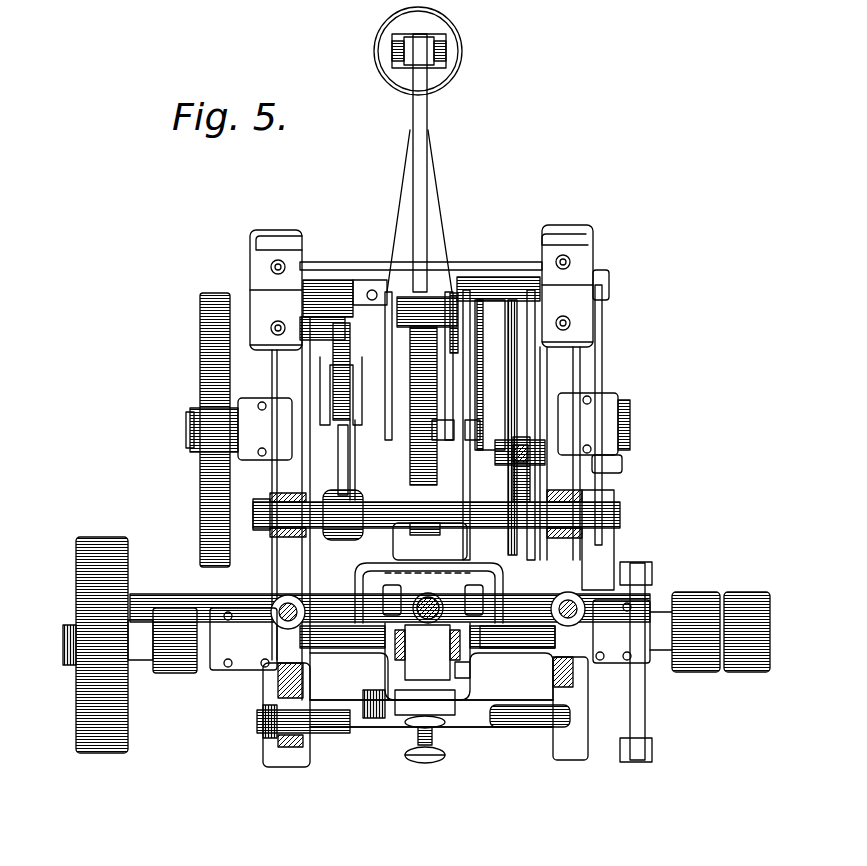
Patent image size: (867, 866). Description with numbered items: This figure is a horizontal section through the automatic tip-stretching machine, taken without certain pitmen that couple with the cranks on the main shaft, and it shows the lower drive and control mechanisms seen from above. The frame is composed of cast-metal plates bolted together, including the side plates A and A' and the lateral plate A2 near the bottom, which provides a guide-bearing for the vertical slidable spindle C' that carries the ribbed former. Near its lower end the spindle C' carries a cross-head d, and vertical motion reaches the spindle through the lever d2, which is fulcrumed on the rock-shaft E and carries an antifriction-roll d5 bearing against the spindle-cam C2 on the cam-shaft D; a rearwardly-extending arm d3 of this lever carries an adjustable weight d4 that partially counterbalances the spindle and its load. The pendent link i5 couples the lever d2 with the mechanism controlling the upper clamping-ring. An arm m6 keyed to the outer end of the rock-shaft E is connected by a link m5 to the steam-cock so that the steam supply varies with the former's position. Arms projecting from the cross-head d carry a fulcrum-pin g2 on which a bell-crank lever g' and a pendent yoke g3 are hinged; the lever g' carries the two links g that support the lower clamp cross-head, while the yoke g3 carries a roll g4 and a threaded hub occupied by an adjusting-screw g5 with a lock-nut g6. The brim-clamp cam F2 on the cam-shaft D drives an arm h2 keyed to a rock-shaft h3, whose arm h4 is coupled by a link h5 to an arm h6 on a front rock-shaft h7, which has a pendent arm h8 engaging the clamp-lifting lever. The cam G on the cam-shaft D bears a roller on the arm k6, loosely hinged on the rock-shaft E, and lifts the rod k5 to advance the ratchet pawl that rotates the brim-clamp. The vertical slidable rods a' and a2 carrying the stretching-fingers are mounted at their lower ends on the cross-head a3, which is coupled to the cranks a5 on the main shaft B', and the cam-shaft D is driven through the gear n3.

The weight d4 is at (429, 51).
The rearwardly-extending arm d3 is at (422, 237).
The cam C2 is at (432, 340).
The lateral plate A2 is at (488, 265).
The rock-shaft E is at (318, 292).
The brim-clamp cam F2 is at (341, 327).
The arm k6 is at (440, 432).
The pendent link i5 is at (470, 428).
The arm m6 is at (623, 415).
The gear n3 is at (203, 360).
The arm h2 is at (325, 392).
The lever d2 is at (467, 375).
The antifriction-roll d5 is at (432, 435).
The cam-shaft D is at (190, 428).
The link m5 is at (622, 466).
The cam G is at (530, 482).
The rock-shaft h3 is at (290, 513).
The rod k5 is at (507, 470).
The cross-head d is at (440, 592).
The arm h4 is at (620, 540).
The vertical slidable rod a' is at (390, 599).
The cross-head a3 is at (363, 592).
The spindle C' is at (444, 593).
The link g is at (424, 602).
The crank a5 is at (275, 670).
The vertical slidable rod a2 is at (578, 622).
The main shaft B' is at (114, 645).
The bell-crank lever g' is at (427, 661).
The fulcrum-pin g2 is at (472, 670).
The link h5 is at (645, 693).
The arm h6 is at (637, 762).
The side plate A is at (276, 734).
The pendent arm h8 is at (347, 733).
The roll g4 is at (373, 705).
The lock-nut g6 is at (418, 723).
The adjusting-screw g5 is at (430, 763).
The pendent yoke g3 is at (455, 707).
The rock-shaft h7 is at (540, 720).
The side plate A' is at (570, 734).